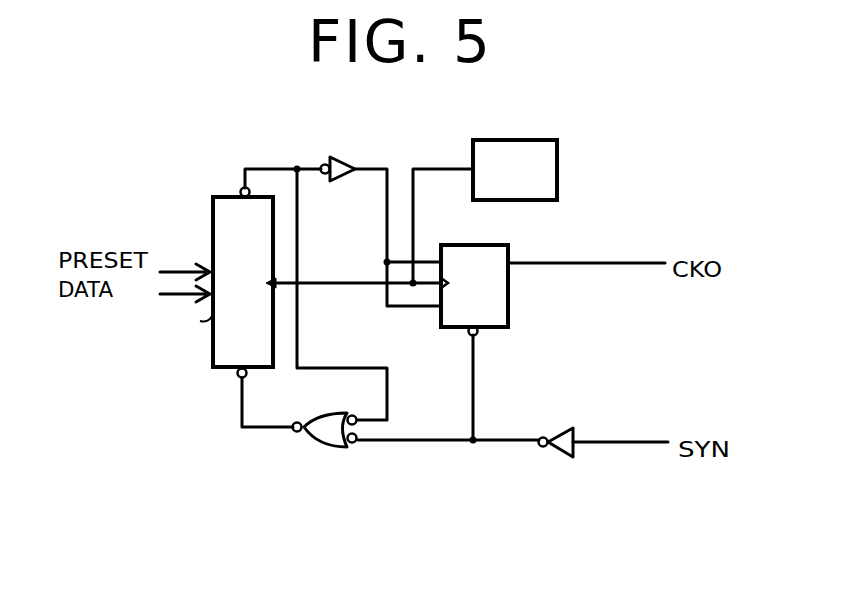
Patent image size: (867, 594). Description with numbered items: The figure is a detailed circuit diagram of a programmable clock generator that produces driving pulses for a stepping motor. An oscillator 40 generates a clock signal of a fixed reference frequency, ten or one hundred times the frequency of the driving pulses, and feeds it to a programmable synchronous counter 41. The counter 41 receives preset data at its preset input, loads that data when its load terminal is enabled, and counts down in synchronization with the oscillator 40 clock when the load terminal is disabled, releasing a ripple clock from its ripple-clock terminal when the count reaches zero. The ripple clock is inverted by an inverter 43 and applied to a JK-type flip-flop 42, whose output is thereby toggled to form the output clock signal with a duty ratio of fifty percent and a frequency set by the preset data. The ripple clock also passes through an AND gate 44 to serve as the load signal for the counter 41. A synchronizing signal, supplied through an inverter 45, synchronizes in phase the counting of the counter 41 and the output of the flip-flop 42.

The oscillator 40 is at (511, 140).
The programmable synchronous counter 41 is at (213, 358).
The JK-type flip-flop 42 is at (500, 244).
The inverter 43 is at (348, 155).
The AND gate 44 is at (330, 414).
The inverter 45 is at (553, 428).